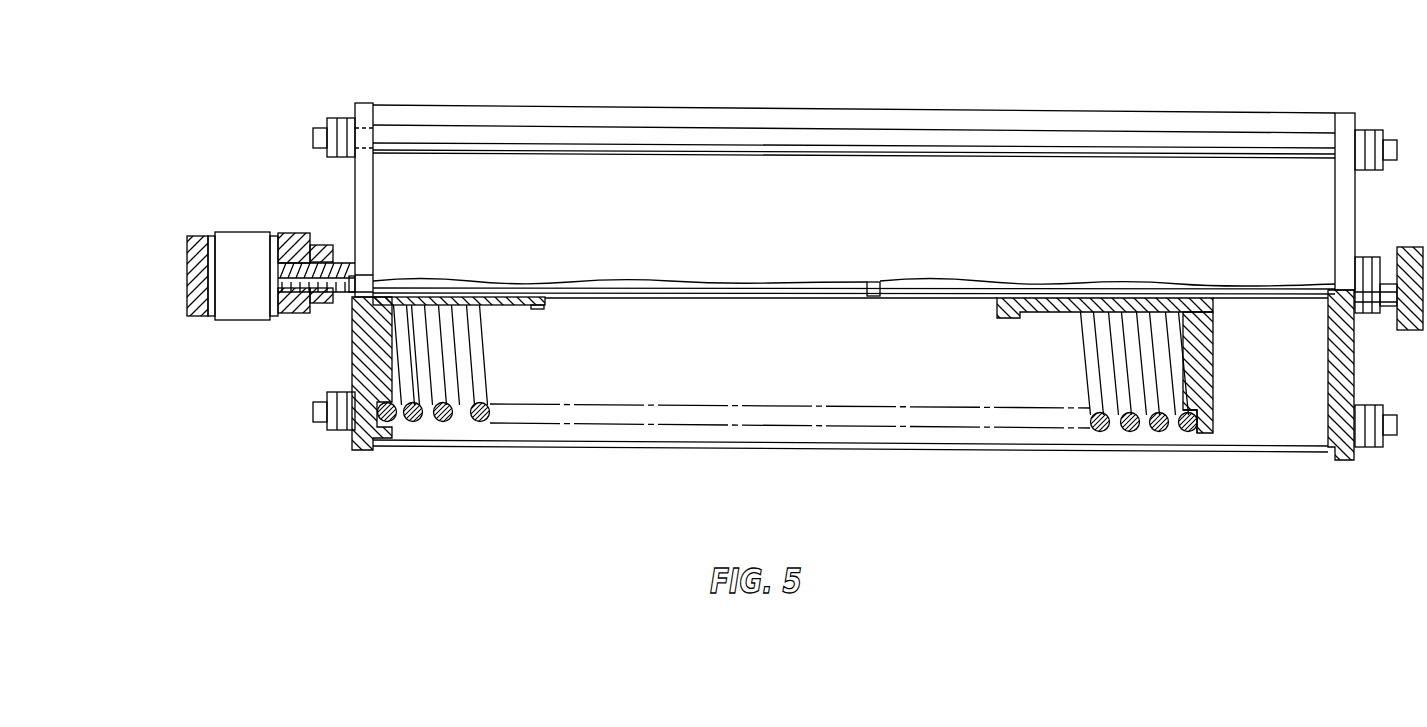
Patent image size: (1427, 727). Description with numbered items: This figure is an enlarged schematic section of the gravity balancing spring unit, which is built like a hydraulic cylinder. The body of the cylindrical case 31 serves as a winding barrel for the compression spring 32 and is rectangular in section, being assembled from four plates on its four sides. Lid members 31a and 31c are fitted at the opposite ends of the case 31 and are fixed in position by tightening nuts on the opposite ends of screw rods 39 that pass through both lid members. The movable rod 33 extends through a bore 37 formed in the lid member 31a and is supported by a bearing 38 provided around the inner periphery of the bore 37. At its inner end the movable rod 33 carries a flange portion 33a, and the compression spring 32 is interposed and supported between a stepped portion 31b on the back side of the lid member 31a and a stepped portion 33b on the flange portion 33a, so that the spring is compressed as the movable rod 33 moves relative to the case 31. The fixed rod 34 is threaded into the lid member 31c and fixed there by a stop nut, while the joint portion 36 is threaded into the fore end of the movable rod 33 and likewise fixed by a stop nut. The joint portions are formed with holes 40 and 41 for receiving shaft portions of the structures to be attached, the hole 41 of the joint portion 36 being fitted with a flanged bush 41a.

The cylindrical case 31 is at (935, 108).
The lid member 31a is at (365, 110).
The stepped portion 31b is at (389, 425).
The lid member 31c is at (1350, 113).
The compression spring 32 is at (1100, 428).
The movable rod 33 is at (345, 305).
The flange portion 33a is at (1214, 395).
The stepped portion 33b is at (1197, 428).
The fixed rod 34 is at (1393, 304).
The joint portion 36 is at (260, 293).
The bore 37 is at (383, 282).
The bearing 38 is at (550, 302).
The screw rods 39 is at (862, 131).
The hole 40 is at (1418, 247).
The hole 41 is at (231, 312).
The flanged bush 41a is at (213, 234).